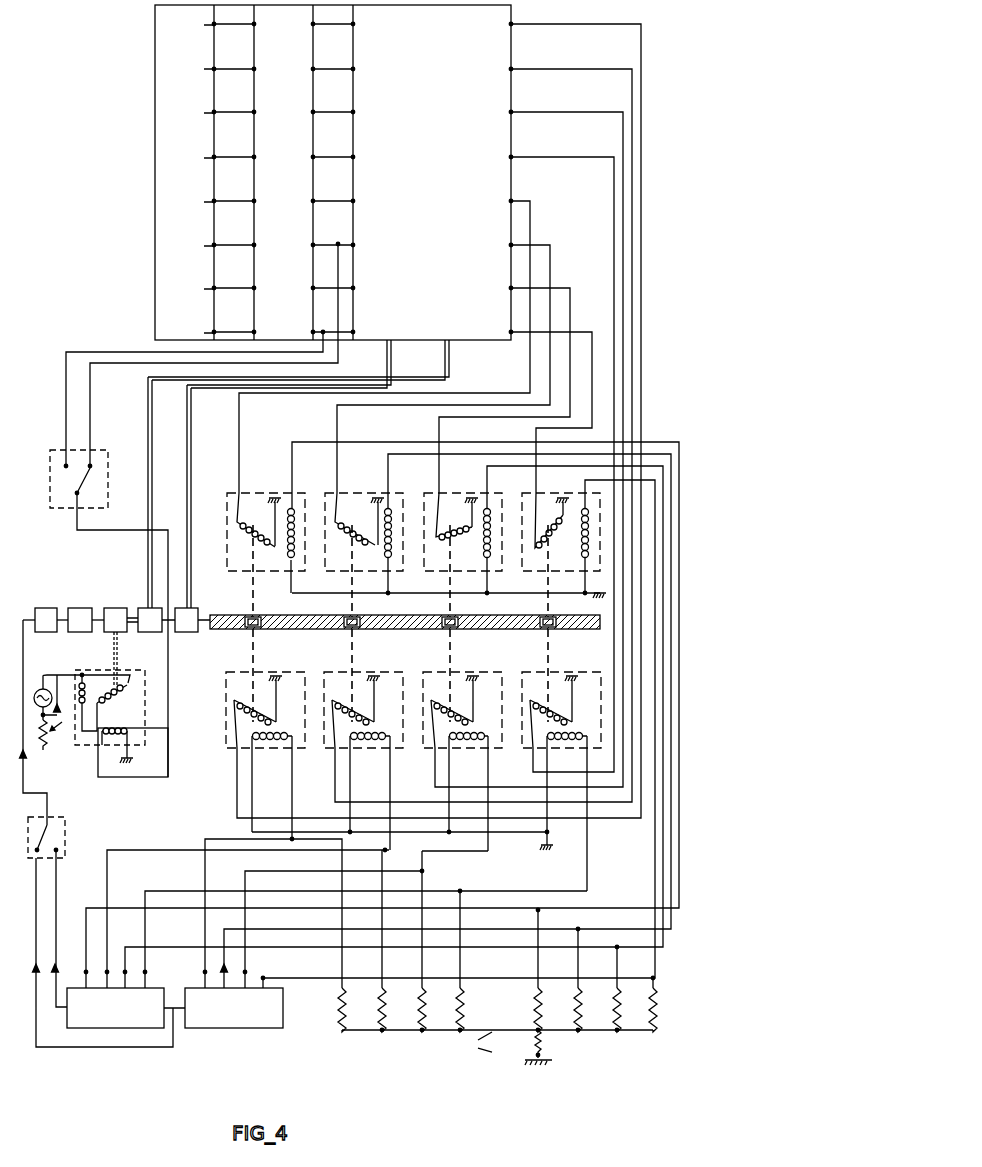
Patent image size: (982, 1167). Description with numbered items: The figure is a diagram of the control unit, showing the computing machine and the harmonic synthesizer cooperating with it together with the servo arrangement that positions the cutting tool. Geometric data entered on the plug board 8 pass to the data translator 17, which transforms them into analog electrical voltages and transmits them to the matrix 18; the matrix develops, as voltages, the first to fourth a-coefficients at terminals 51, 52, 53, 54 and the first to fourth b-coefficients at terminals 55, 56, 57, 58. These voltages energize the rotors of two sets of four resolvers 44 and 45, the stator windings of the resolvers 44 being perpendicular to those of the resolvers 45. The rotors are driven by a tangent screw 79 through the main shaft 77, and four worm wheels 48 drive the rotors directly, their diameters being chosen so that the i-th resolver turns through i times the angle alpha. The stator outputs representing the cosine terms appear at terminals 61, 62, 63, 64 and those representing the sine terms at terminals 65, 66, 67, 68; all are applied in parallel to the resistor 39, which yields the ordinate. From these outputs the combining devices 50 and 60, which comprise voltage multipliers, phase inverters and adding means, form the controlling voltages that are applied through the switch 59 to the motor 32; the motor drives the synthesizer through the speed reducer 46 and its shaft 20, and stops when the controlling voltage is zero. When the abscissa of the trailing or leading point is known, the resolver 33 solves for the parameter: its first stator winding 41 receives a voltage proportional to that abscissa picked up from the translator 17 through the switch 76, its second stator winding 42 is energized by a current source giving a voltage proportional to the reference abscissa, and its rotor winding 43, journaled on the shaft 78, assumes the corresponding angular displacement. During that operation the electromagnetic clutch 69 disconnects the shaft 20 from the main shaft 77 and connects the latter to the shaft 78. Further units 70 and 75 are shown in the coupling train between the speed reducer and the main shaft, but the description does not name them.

The plug board 8 is at (156, 36).
The data translator 17 is at (262, 44).
The matrix 18 is at (362, 44).
The shaft of the speed reducer 20 is at (98, 618).
The motor 32 is at (43, 608).
The resolver 33 is at (41, 682).
The resistor 39 is at (508, 1044).
The first stator winding 41 is at (125, 728).
The second stator winding 42 is at (90, 676).
The rotor winding 43 is at (120, 692).
The resolvers 44 is at (230, 748).
The resolvers 45 is at (258, 497).
The speed reducer 46 is at (79, 608).
The worm wheels 48 is at (256, 631).
The combining device 50 is at (115, 1008).
The terminal 51 is at (513, 22).
The terminal 52 is at (513, 67).
The terminal 53 is at (513, 110).
The terminal 54 is at (513, 155).
The terminal 55 is at (513, 199).
The terminal 56 is at (513, 243).
The terminal 57 is at (509, 286).
The terminal 58 is at (509, 330).
The switch 59 is at (58, 829).
The combining device 60 is at (158, 952).
The terminal 61 is at (204, 973).
The terminal 62 is at (98, 966).
The terminal 63 is at (245, 974).
The terminal 64 is at (145, 974).
The terminal 65 is at (85, 969).
The terminal 66 is at (218, 970).
The terminal 67 is at (125, 960).
The terminal 68 is at (270, 976).
The electromagnetic clutch 69 is at (114, 608).
The unit 70 is at (188, 612).
The unit 75 is at (149, 610).
The switch 76 is at (100, 456).
The main shaft 77 is at (154, 452).
The shaft 78 is at (117, 658).
The tangent screw 79 is at (406, 630).